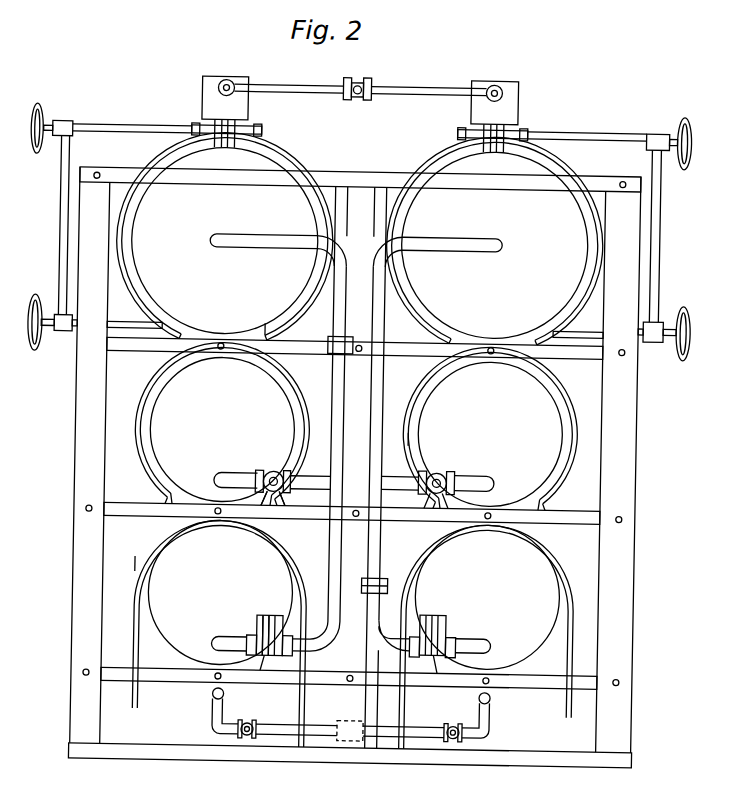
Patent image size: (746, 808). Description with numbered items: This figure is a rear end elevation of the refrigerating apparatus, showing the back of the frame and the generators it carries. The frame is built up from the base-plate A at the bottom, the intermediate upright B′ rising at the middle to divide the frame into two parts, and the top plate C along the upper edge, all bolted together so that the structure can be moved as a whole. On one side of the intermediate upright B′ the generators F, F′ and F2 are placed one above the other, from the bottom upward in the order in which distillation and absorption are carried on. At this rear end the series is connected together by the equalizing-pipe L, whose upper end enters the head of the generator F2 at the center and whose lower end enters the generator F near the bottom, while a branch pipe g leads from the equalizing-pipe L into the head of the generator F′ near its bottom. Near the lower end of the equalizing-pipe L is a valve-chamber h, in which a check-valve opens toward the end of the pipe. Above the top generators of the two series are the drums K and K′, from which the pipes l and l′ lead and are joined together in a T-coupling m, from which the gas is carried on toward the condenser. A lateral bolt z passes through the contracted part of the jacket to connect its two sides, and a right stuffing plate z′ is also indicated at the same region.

The base-plate A is at (176, 758).
The intermediate upright B' is at (350, 715).
The top plate C is at (361, 167).
The generator F is at (208, 633).
The generator F' is at (211, 423).
The generator F2 is at (129, 237).
The equalizing-pipe L is at (352, 467).
The branch pipe g is at (271, 477).
The valve-chamber h is at (266, 622).
The drum K is at (211, 112).
The drum K' is at (505, 117).
The lateral bolt z is at (237, 125).
The right stuffing plate z' is at (478, 130).
The pipe l is at (289, 99).
The pipe l' is at (428, 101).
The T-coupling m is at (357, 80).